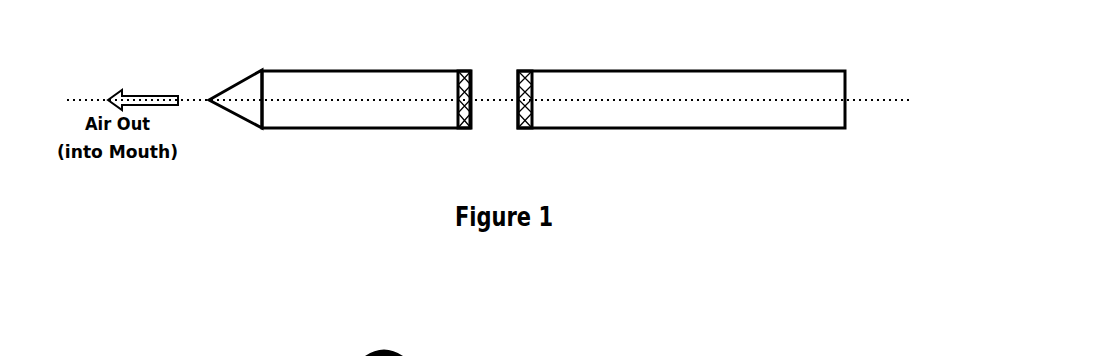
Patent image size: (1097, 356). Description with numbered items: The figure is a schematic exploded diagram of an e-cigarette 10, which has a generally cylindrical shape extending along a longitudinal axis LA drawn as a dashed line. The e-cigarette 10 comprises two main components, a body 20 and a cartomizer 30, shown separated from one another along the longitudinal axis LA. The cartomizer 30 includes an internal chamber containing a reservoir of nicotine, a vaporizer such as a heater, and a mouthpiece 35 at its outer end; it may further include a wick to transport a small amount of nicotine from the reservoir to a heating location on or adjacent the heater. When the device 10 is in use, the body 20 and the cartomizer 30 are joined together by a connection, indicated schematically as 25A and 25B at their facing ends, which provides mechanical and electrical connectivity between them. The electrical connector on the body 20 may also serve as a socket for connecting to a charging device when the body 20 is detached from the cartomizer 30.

The e-cigarette 10 is at (516, 117).
The body 20 is at (705, 147).
The connection 25A is at (424, 125).
The connection 25B is at (671, 69).
The cartomizer 30 is at (362, 79).
The mouthpiece 35 is at (201, 75).
The longitudinal axis LA is at (489, 90).